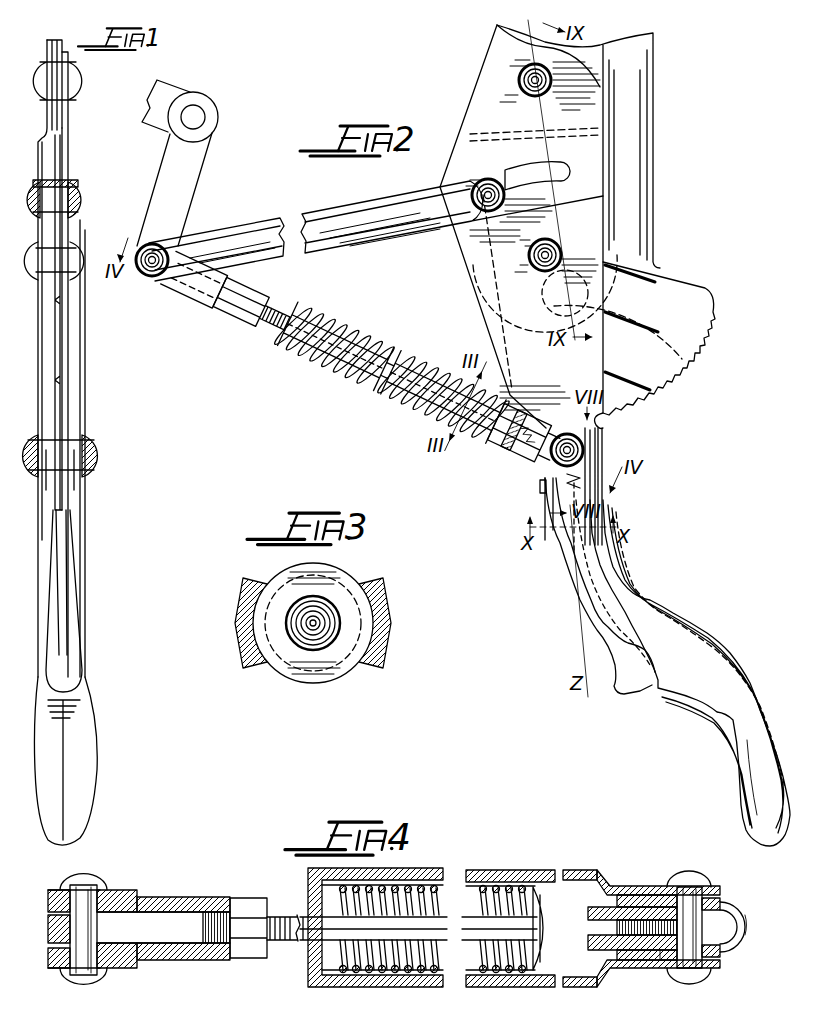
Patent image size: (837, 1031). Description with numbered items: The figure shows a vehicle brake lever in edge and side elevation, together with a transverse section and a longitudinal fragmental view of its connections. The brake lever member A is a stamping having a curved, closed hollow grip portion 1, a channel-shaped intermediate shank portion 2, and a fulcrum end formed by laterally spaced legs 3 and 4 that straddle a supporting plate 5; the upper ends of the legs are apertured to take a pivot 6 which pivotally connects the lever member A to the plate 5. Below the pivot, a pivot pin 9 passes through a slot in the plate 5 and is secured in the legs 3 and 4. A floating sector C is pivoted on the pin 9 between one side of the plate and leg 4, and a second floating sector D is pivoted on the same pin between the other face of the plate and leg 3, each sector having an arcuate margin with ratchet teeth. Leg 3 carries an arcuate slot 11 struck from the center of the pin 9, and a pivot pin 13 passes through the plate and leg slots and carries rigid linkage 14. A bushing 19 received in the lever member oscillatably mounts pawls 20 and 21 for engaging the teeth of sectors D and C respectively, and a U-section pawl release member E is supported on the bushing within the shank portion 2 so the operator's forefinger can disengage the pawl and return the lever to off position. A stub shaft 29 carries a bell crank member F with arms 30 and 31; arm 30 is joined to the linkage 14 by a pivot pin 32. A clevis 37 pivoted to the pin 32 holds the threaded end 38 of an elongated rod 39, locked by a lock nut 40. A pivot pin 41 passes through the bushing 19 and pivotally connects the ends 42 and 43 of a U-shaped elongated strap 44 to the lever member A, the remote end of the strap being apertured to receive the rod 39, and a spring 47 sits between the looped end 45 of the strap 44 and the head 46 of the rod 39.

In FIG. 2, the grip portion 1 is at (747, 728).
In FIG. 2, the shank portion 2 is at (568, 545).
In FIG. 1, the leg 3 is at (69, 143).
In FIG. 2, the leg 3 is at (472, 190).
In FIG. 1, the leg 4 is at (44, 131).
In FIG. 1, the supporting plate 5 is at (57, 47).
In FIG. 2, the supporting plate 5 is at (640, 56).
In FIG. 1, the pivot 6 is at (42, 80).
In FIG. 2, the pivot 6 is at (518, 76).
In FIG. 1, the pivot pin 9 is at (36, 264).
In FIG. 2, the pivot pin 9 is at (562, 251).
In FIG. 2, the arcuate slot 11 is at (563, 170).
In FIG. 1, the pivot pin 13 is at (38, 200).
In FIG. 2, the pivot pin 13 is at (478, 185).
In FIG. 2, the rigid linkage 14 is at (372, 232).
In FIG. 4, the rigid linkage 14 is at (142, 878).
In FIG. 4, the bushing 19 is at (727, 953).
In FIG. 4, the pawl 20 is at (608, 953).
In FIG. 4, the pawl 21 is at (620, 907).
In FIG. 2, the stub shaft 29 is at (206, 118).
In FIG. 2, the arm 30 is at (186, 190).
In FIG. 4, the arm 30 is at (54, 932).
In FIG. 2, the arm 31 is at (158, 82).
In FIG. 4, the pivot pin 32 is at (80, 950).
In FIG. 4, the clevis 37 is at (193, 900).
In FIG. 4, the threaded end 38 is at (213, 917).
In FIG. 4, the elongated rod 39 is at (310, 933).
In FIG. 4, the lock nut 40 is at (245, 952).
In FIG. 2, the pivot pin 41 is at (584, 445).
In FIG. 4, the pivot pin 41 is at (687, 897).
In FIG. 4, the strap end 42 is at (717, 972).
In FIG. 4, the strap end 43 is at (713, 888).
In FIG. 2, the U-shaped elongated strap 44 is at (500, 438).
In FIG. 3, the U-shaped elongated strap 44 is at (376, 623).
In FIG. 4, the U-shaped elongated strap 44 is at (533, 868).
In FIG. 4, the looped end 45 is at (316, 890).
In FIG. 3, the head 46 is at (315, 648).
In FIG. 4, the head 46 is at (543, 927).
In FIG. 2, the spring 47 is at (362, 322).
In FIG. 4, the spring 47 is at (435, 960).
In FIG. 1, the brake lever member A is at (80, 521).
In FIG. 2, the brake lever member A is at (643, 611).
In FIG. 4, the brake lever member A is at (752, 921).
In FIG. 1, the floating sector C is at (50, 362).
In FIG. 1, the floating sector D is at (68, 352).
In FIG. 2, the floating sector D is at (679, 295).
In FIG. 2, the pawl release member E is at (572, 599).
In FIG. 4, the pawl release member E is at (662, 970).
In FIG. 2, the bell crank member F is at (214, 101).